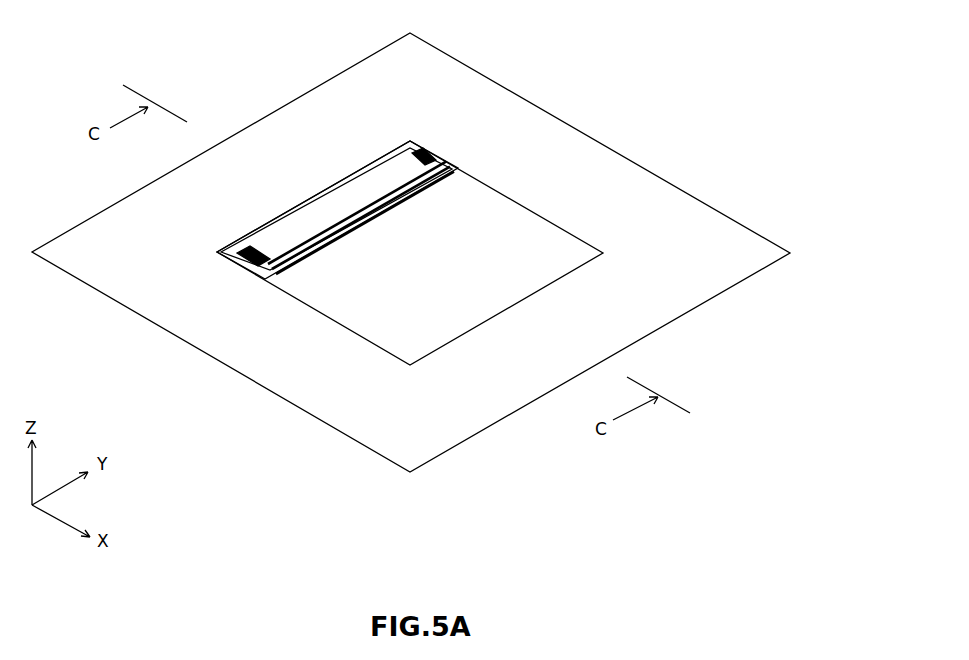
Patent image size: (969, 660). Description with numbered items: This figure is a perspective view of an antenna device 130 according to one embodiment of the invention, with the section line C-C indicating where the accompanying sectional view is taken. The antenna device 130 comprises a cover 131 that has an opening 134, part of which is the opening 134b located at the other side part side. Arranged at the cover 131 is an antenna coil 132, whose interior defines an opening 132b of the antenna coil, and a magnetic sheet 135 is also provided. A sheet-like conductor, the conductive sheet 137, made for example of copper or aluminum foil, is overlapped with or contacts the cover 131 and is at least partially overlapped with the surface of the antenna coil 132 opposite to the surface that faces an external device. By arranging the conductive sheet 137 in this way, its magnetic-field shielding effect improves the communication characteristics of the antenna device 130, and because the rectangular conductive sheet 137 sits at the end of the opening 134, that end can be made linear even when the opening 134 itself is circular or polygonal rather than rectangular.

The antenna device 130 is at (688, 26).
The cover 131 is at (700, 258).
The antenna coil 132 is at (410, 193).
The opening of antenna coil 132b is at (425, 156).
The opening of cover 134 is at (424, 253).
The opening of cover at other side part side 134b is at (500, 285).
The magnetic sheet 135 is at (338, 209).
The conductor (conductive sheet) 137 is at (220, 257).